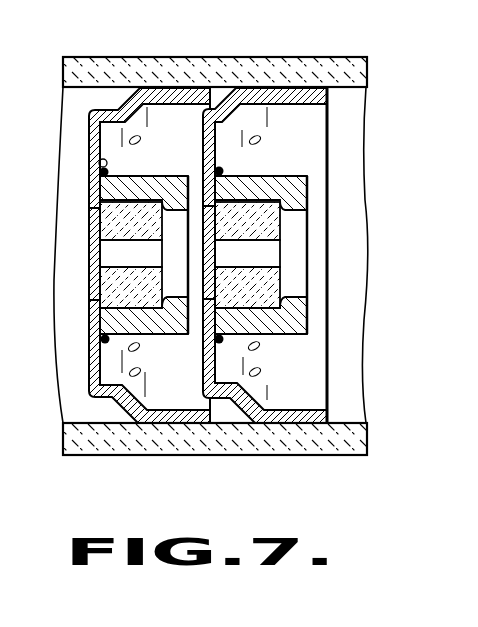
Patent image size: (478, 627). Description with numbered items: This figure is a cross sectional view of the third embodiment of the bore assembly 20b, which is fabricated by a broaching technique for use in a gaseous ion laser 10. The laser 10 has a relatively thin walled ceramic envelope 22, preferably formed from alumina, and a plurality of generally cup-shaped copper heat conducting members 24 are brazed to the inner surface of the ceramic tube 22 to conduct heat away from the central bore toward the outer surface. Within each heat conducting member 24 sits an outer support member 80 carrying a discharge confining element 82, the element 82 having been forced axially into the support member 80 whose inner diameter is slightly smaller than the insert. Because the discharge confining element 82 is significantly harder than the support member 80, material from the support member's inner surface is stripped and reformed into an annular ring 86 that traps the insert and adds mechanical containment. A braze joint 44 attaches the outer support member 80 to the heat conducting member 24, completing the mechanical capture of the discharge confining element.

The gaseous ion laser 10 is at (135, 48).
The ceramic envelope 22 is at (215, 62).
The heat conducting member 24 is at (310, 125).
The braze joint 44 is at (99, 158).
The outer support member 80 is at (293, 186).
The discharge confining element 82 is at (272, 228).
The annular ring 86 is at (283, 300).
The bore assembly 20b is at (314, 324).